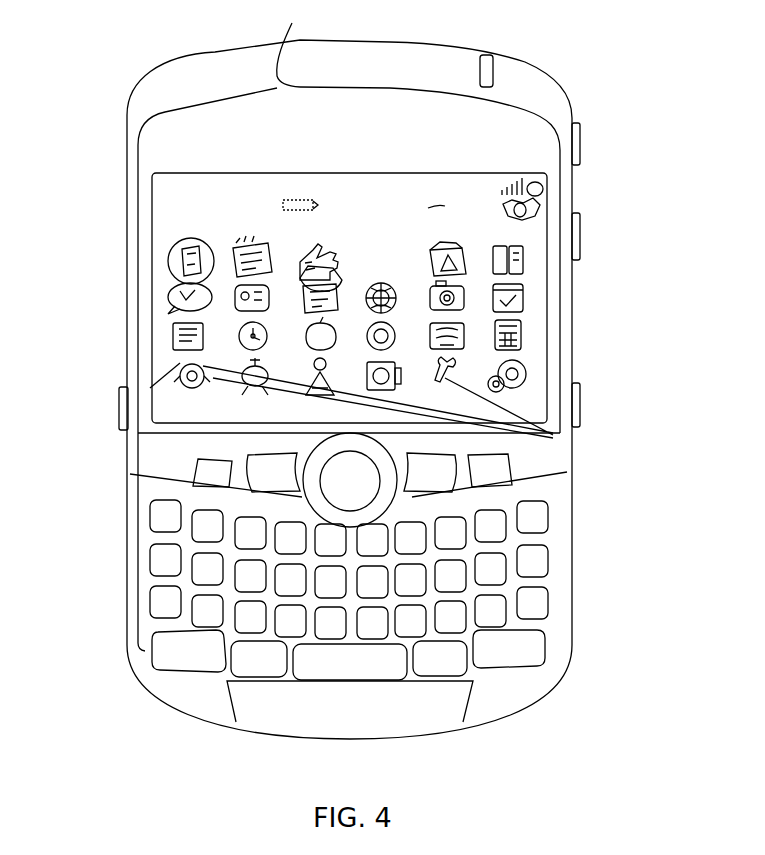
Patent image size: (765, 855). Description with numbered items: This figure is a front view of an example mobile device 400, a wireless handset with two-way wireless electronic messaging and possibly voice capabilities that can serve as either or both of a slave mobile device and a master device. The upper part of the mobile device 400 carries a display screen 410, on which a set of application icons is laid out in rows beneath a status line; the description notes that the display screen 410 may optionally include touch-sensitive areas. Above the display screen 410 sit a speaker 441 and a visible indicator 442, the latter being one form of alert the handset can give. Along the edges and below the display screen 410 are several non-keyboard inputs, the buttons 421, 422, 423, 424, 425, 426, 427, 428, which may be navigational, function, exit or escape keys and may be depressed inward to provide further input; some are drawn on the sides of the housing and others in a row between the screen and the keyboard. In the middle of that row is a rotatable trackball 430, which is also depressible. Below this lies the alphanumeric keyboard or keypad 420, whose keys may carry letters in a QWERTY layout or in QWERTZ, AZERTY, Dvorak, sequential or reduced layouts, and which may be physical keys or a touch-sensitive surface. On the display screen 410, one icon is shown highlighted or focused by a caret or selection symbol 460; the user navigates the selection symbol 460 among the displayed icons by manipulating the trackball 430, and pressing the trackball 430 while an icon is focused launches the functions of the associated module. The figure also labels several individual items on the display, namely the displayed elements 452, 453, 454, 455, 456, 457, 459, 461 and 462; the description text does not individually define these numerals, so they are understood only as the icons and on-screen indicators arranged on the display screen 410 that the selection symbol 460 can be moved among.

The mobile device 400 is at (603, 260).
The display screen 410 is at (152, 240).
The alphanumeric keyboard or keypad 420 is at (128, 572).
The button 421 is at (118, 405).
The button 422 is at (581, 147).
The button 423 is at (580, 240).
The button 424 is at (580, 415).
The button 425 is at (195, 470).
The button 426 is at (248, 455).
The button 427 is at (445, 458).
The button 428 is at (502, 456).
The trackball 430 is at (373, 461).
The speaker 441 is at (292, 26).
The visible indicator 442 is at (477, 68).
The messaging application icon 452 is at (200, 289).
The cursor hand pointer 453 is at (322, 245).
The address book icon 454 is at (527, 257).
The phone application icon 455 is at (250, 245).
The message count indicator 456 is at (445, 245).
The selected application icon 457 is at (279, 248).
The icon label area 459 is at (553, 435).
The selection symbol 460 is at (187, 242).
The browser icon 461 is at (391, 313).
The camera icon 462 is at (474, 313).